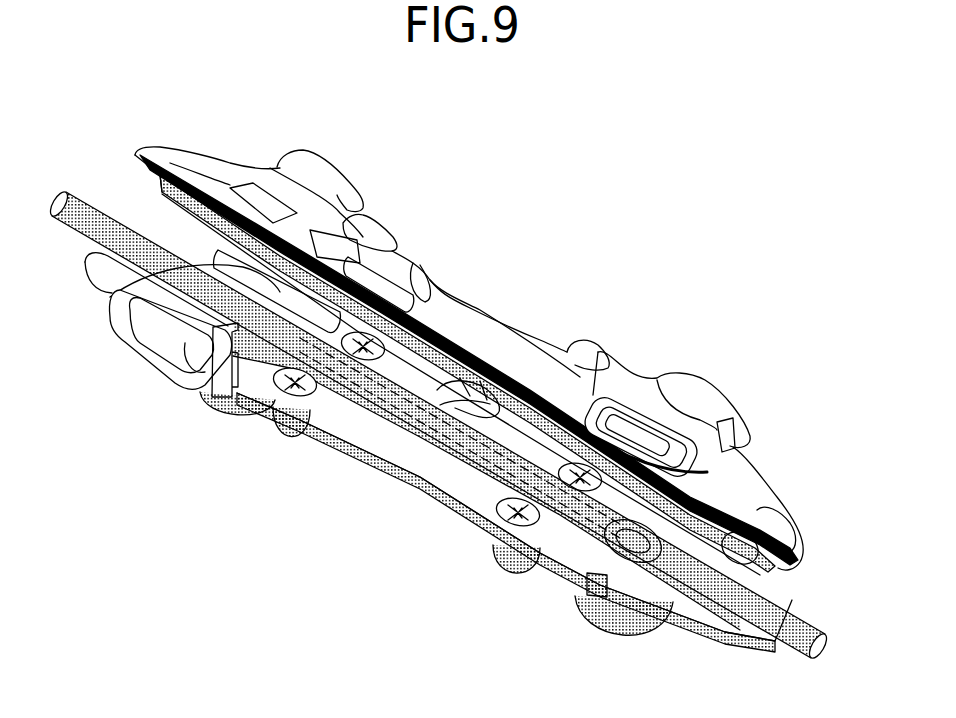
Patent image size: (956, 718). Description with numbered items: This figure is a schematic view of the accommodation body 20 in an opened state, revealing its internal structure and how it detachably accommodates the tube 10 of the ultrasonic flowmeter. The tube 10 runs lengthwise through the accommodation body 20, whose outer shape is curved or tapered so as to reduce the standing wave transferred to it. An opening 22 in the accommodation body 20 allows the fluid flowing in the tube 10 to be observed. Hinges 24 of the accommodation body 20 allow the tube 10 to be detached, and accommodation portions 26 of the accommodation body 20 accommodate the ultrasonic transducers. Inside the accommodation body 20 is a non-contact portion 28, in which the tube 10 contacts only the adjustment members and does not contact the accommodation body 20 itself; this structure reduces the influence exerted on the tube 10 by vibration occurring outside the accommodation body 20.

The tube 10 is at (800, 632).
The accommodation body 20 is at (266, 456).
The opening 22 is at (440, 342).
The hinges 24 is at (110, 297).
The accommodation portions 26 is at (318, 164).
The non-contact portion 28 is at (405, 462).